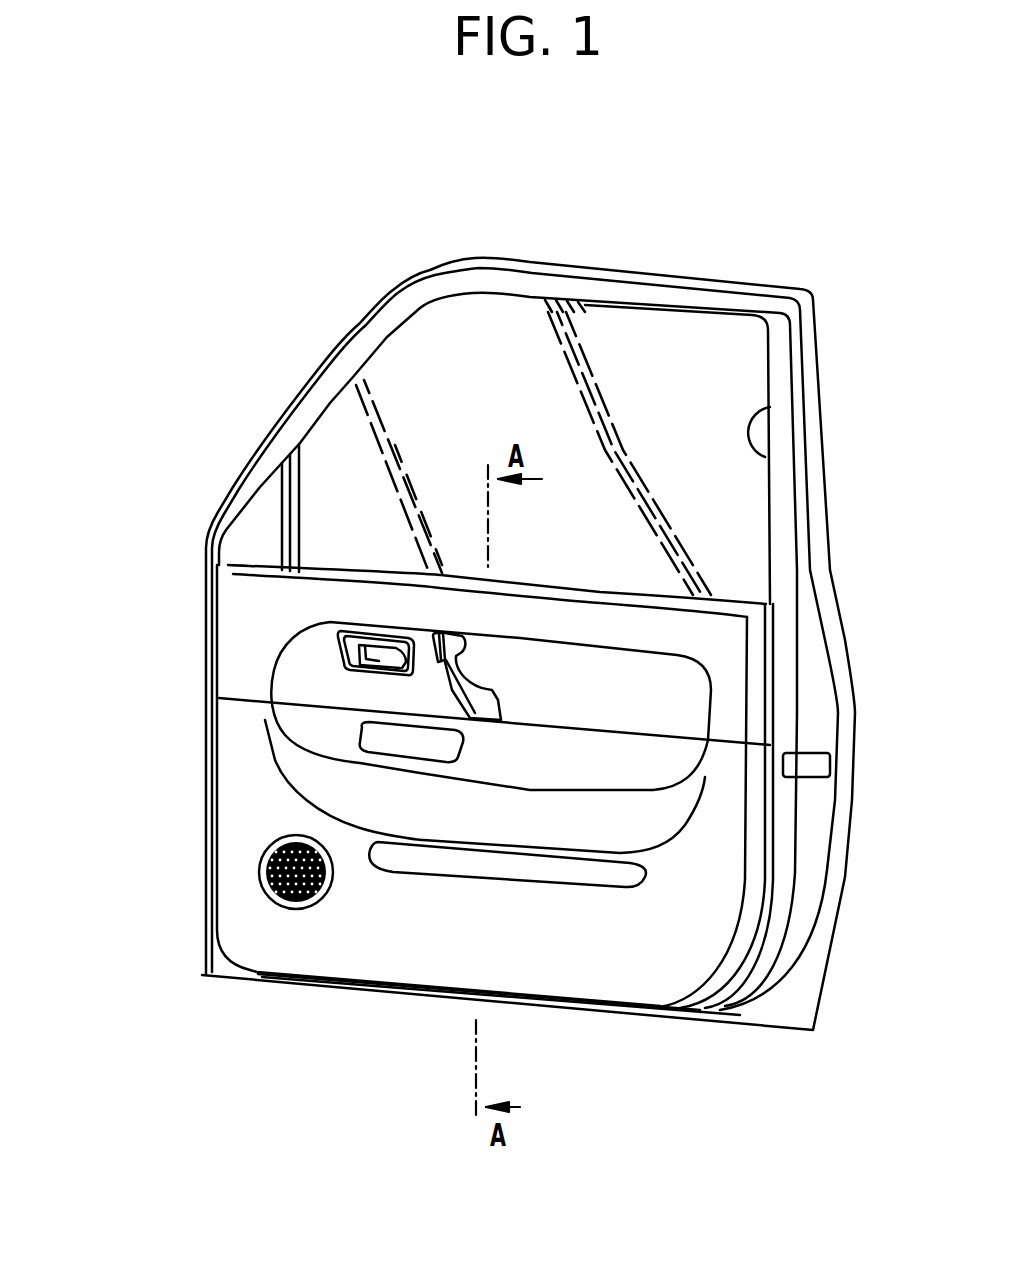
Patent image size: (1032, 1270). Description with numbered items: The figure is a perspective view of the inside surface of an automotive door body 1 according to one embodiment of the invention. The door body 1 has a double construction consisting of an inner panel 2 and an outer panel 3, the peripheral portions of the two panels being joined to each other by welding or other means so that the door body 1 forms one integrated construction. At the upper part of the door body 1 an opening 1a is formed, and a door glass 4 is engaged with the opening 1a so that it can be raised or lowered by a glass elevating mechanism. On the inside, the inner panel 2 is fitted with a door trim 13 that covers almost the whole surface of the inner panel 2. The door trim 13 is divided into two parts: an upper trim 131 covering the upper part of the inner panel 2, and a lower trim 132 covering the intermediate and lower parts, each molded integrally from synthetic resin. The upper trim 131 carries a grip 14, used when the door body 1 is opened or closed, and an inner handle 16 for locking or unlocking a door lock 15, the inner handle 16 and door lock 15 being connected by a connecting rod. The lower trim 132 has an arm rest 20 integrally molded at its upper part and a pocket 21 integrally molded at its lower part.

The door body 1 is at (856, 858).
The opening 1a is at (770, 407).
The inner panel 2 is at (790, 637).
The outer panel 3 is at (849, 690).
The door glass 4 is at (698, 325).
The door trim 13 is at (110, 600).
The upper trim 131 is at (247, 668).
The lower trim 132 is at (240, 742).
The grip 14 is at (466, 677).
The door lock 15 is at (823, 764).
The inner handle 16 is at (377, 666).
The arm rest 20 is at (560, 778).
The pocket 21 is at (455, 870).